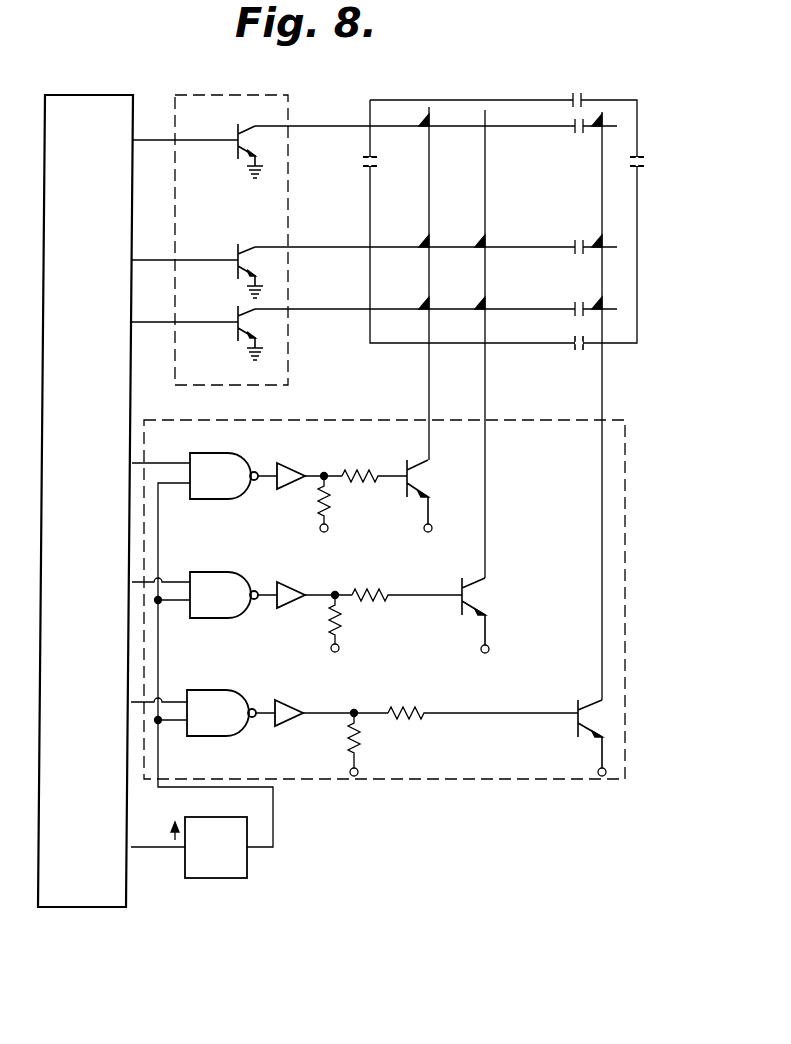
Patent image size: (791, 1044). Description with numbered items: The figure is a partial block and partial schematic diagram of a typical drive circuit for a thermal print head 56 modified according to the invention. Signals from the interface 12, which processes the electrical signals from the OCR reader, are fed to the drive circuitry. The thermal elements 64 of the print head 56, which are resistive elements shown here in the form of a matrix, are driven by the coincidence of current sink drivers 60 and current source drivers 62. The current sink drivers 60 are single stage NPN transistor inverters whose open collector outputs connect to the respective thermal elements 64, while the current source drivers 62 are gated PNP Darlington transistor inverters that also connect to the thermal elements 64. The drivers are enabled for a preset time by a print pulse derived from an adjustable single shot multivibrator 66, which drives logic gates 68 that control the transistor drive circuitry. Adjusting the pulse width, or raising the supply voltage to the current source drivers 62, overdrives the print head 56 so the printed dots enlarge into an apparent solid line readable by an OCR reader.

The interface 12 is at (100, 120).
The current sink drivers 60 is at (198, 93).
The thermal elements 64 is at (485, 128).
The print head 56 is at (469, 382).
The logic gates 68 is at (240, 563).
The current source drivers 62 is at (402, 633).
The adjustable single shot multivibrator 66 is at (247, 870).